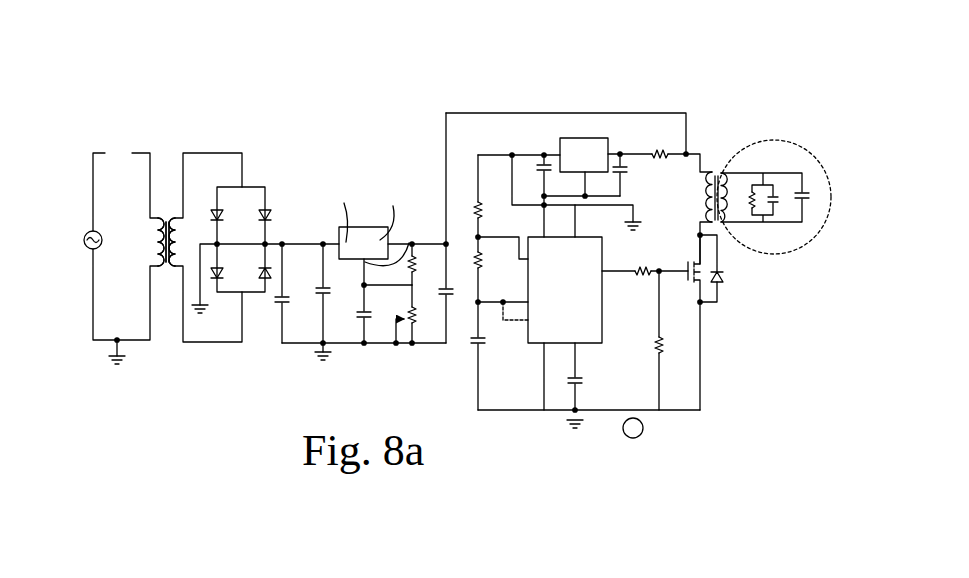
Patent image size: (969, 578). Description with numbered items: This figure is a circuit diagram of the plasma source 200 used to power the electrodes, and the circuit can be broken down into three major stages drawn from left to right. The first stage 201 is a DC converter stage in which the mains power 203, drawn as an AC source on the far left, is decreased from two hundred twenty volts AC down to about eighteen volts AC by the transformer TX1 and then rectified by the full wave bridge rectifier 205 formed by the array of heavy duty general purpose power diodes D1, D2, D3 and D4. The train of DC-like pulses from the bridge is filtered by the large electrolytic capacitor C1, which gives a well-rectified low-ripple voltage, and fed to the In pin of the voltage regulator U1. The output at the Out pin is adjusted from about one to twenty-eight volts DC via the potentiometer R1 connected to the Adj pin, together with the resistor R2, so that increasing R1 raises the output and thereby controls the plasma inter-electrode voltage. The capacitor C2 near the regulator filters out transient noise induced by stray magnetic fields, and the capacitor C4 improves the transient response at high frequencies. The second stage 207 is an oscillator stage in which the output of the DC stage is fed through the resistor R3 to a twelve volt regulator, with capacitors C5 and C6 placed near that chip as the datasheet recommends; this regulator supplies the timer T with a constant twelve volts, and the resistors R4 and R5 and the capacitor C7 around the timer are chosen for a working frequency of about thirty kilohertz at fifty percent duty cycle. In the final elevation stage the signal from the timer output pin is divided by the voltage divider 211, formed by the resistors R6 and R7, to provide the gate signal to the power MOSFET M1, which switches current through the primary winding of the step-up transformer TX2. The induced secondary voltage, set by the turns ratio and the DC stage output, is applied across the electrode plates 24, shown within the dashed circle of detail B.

The plasma source 200 is at (390, 90).
The first stage 201 is at (167, 375).
The mains power 203 is at (84, 240).
The full wave bridge rectifier 205 is at (265, 162).
The second stage 207 is at (605, 135).
The voltage divider 211 is at (648, 318).
The electrode plates 24 is at (808, 182).
The detail B is at (785, 254).
The 555 timer T is at (604, 333).
The transformer TX1 is at (165, 211).
The step up transformer TX2 is at (716, 172).
The power diode D1 is at (270, 206).
The power diode D2 is at (238, 282).
The power diode D3 is at (207, 214).
The power diode D4 is at (249, 280).
The electrolytic capacitor C1 is at (291, 300).
The capacitor C2 is at (332, 292).
The capacitor C4 is at (457, 296).
The capacitor C5 is at (627, 167).
The capacitor C6 is at (538, 166).
The capacitor C7 is at (487, 343).
The potentiometer R1 is at (424, 322).
The resistor R2 is at (418, 268).
The resistor R3 is at (660, 147).
The resistor R4 is at (467, 240).
The resistor R5 is at (487, 210).
The resistor R6 is at (666, 345).
The resistor R7 is at (643, 277).
The voltage regulator U1 is at (369, 220).
The power MOSFET M1 is at (690, 292).